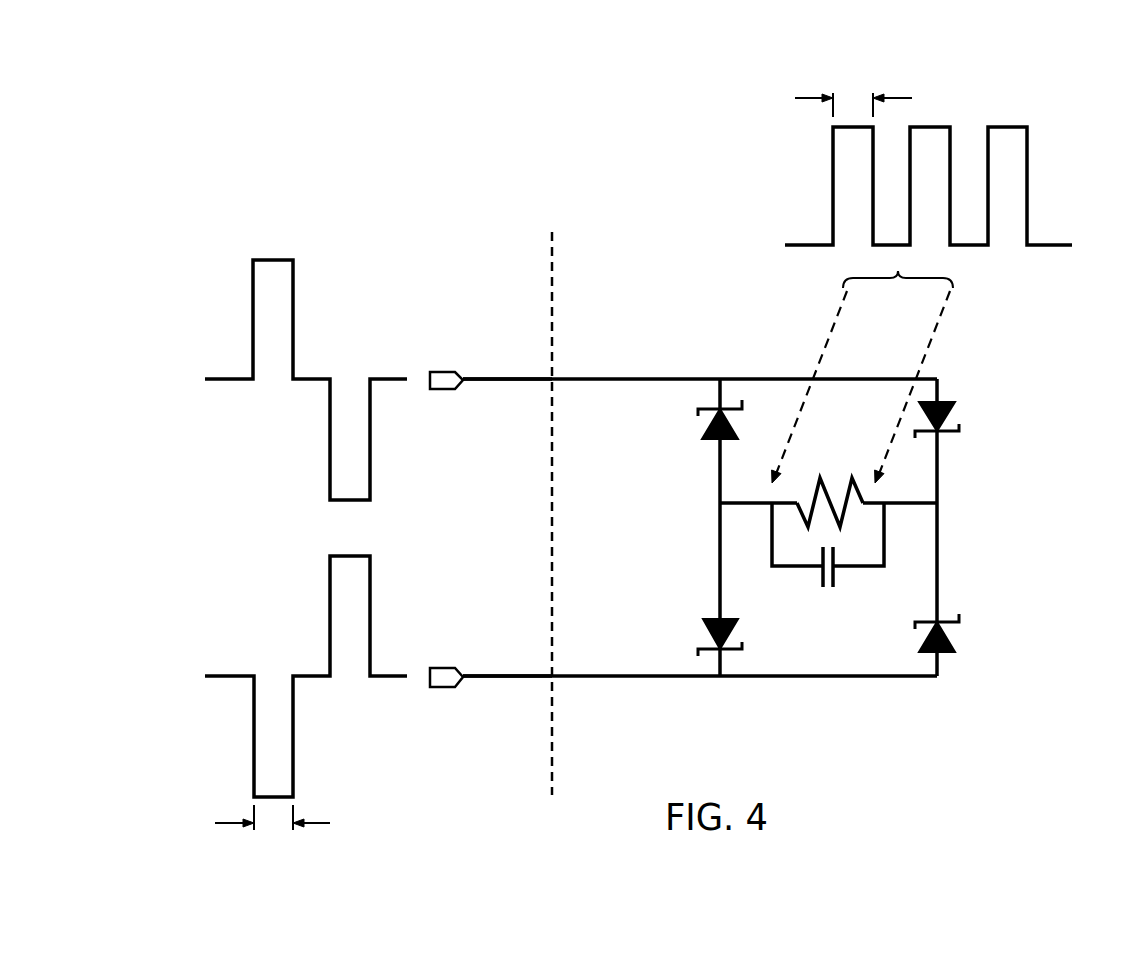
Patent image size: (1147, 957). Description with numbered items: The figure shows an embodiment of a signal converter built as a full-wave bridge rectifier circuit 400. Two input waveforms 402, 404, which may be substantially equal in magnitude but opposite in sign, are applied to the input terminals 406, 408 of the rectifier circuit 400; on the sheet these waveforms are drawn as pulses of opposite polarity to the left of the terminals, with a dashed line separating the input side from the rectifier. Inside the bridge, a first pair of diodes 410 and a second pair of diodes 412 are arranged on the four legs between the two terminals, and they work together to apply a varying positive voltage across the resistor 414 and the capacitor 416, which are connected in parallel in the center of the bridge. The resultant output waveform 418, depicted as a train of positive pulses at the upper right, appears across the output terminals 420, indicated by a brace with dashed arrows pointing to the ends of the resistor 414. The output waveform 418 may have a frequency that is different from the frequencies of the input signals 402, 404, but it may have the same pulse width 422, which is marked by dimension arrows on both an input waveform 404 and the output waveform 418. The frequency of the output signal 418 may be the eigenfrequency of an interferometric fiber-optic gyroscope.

The full-wave bridge rectifier circuit 400 is at (586, 204).
The input waveform 402 is at (253, 296).
The input waveform 404 is at (254, 740).
The input terminal 406 is at (440, 371).
The input terminal 408 is at (440, 667).
The first pair of diodes 410 is at (703, 426).
The second pair of diodes 412 is at (955, 409).
The resistor 414 is at (823, 488).
The capacitor 416 is at (838, 583).
The output waveform 418 is at (1030, 201).
The output terminals 420 is at (955, 280).
The pulse width 422 is at (892, 98).